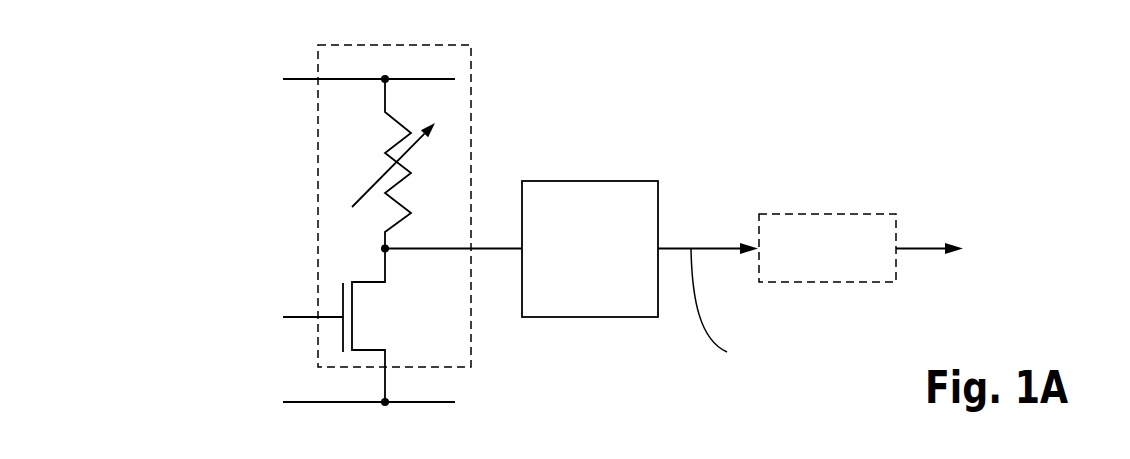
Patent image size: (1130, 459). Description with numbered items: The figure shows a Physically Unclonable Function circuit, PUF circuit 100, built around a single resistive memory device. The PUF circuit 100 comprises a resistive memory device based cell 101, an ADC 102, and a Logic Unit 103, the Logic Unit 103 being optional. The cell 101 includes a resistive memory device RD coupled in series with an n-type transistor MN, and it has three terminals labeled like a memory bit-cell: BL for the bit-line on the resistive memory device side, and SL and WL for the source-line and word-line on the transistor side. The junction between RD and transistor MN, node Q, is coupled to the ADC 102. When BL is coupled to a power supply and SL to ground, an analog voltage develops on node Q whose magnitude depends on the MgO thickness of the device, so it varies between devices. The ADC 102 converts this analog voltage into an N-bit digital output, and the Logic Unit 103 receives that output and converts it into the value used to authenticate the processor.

The PUF circuit 100 is at (694, 38).
The resistive memory device based cell 101 is at (472, 110).
The ADC 102 is at (571, 272).
The Logic Unit 103 is at (827, 248).